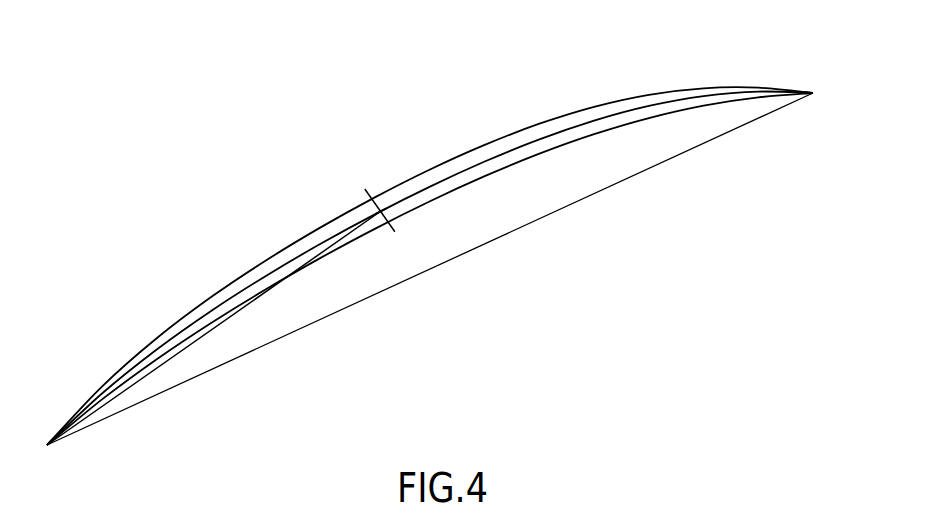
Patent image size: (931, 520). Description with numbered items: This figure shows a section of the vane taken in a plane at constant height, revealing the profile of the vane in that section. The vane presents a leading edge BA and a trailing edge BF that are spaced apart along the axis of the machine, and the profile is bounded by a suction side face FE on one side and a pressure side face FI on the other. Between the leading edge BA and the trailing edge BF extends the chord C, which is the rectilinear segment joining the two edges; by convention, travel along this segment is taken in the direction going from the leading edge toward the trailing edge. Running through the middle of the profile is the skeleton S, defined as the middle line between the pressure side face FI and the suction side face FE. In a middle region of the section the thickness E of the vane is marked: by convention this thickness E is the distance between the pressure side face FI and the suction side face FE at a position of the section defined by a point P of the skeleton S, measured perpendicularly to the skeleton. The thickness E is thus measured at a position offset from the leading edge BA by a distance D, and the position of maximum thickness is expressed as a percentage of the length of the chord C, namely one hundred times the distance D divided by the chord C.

The leading edge BA is at (46, 451).
The trailing edge BF is at (812, 83).
The suction side face FE is at (508, 135).
The pressure side face FI is at (519, 163).
The skeleton S is at (445, 176).
The point of the skeleton P is at (381, 211).
The thickness E is at (367, 199).
The distance D is at (185, 346).
The chord C is at (430, 271).